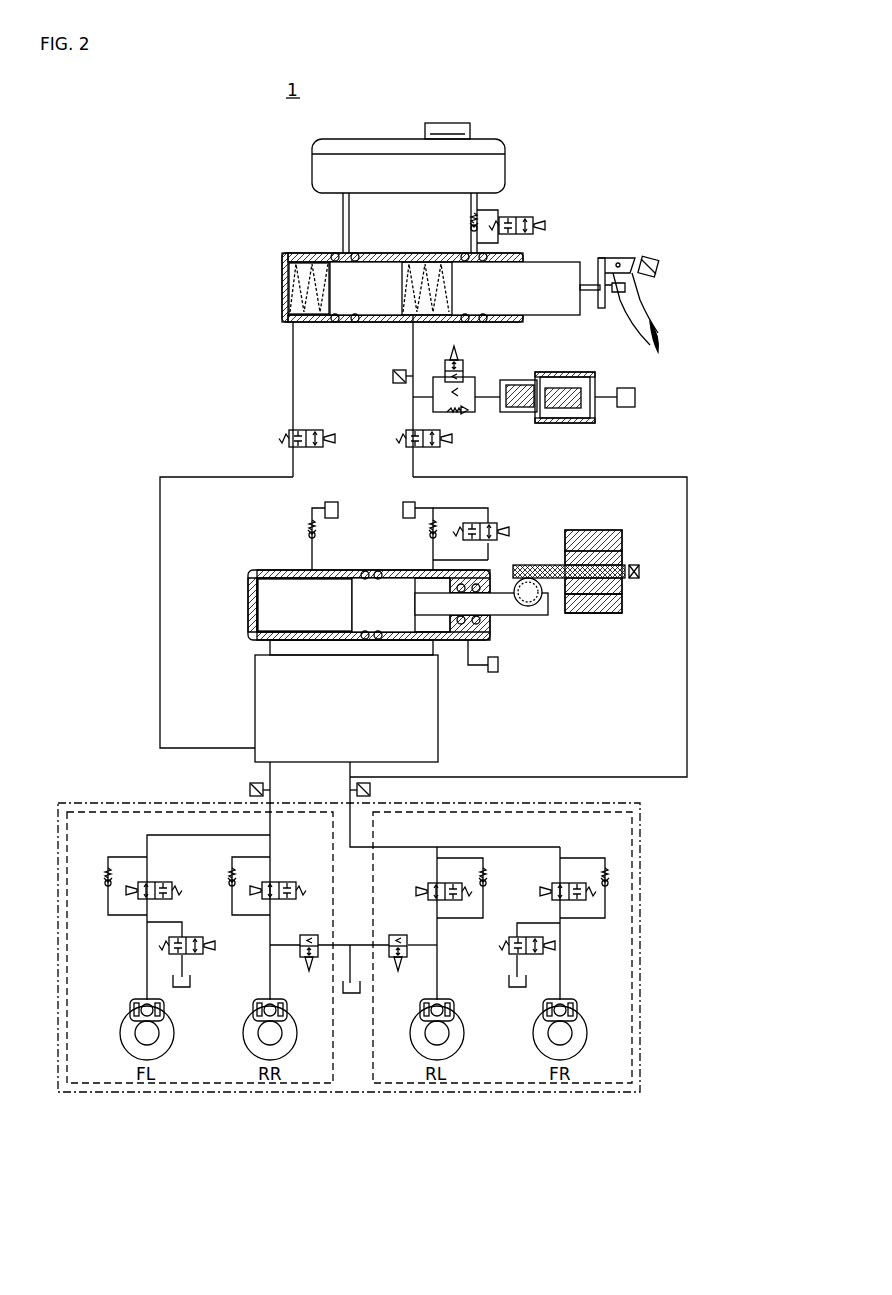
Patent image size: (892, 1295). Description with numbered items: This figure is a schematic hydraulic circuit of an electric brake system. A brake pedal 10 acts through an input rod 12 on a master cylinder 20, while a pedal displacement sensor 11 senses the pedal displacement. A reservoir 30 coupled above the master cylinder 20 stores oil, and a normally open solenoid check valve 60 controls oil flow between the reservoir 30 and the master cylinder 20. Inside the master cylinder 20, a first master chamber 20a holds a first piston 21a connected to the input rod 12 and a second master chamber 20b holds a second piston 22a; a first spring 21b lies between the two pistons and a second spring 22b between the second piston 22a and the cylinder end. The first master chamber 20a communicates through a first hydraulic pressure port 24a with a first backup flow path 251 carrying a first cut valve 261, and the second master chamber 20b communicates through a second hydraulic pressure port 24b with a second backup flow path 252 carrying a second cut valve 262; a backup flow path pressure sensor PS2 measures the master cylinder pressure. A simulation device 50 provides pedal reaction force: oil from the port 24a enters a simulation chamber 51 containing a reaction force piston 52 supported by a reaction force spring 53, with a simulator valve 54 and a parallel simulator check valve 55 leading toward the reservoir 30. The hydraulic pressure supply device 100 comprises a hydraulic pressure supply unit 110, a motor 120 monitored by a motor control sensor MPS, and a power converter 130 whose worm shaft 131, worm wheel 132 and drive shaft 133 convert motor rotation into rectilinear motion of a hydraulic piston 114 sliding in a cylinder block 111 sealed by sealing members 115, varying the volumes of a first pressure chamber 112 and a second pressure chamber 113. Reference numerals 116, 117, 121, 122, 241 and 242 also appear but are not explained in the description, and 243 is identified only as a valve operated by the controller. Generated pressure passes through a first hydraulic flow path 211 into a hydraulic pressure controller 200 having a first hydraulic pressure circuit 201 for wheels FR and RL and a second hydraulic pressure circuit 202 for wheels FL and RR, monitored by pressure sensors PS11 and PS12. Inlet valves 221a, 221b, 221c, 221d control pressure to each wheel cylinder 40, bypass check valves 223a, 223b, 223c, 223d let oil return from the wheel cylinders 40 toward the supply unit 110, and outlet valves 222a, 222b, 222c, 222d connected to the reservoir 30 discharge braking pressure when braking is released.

The brake pedal 10 is at (630, 293).
The pedal displacement sensor 11 is at (656, 262).
The input rod 12 is at (603, 272).
The master cylinder 20 is at (282, 270).
The first master chamber 20a is at (427, 262).
The second master chamber 20b is at (312, 262).
The first piston 21a is at (560, 262).
The first spring 21b is at (433, 315).
The second piston 22a is at (372, 262).
The second spring 22b is at (289, 290).
The first hydraulic pressure port 24a is at (410, 322).
The second hydraulic pressure port 24b is at (287, 320).
The reservoir 30 is at (340, 138).
The wheel cylinder 40 is at (165, 1012).
The simulation device 50 is at (595, 360).
The simulation chamber 51 is at (570, 372).
The reaction force piston 52 is at (525, 385).
The reaction force spring 53 is at (544, 388).
The simulator valve 54 is at (464, 362).
The simulator check valve 55 is at (470, 412).
The check valve 60 is at (532, 245).
The hydraulic pressure supply device 100 is at (242, 520).
The hydraulic pressure supply unit 110 is at (243, 562).
The cylinder block 111 is at (257, 600).
The first pressure chamber 112 is at (268, 610).
The second pressure chamber 113 is at (466, 645).
The hydraulic piston 114 is at (403, 585).
The sealing members 115 is at (367, 571).
The first communication hole 116 is at (312, 553).
The second communication hole 117 is at (438, 560).
The motor 120 is at (620, 524).
The stator 121 is at (622, 607).
The rotor 122 is at (622, 586).
The power converter 130 is at (553, 552).
The worm shaft 131 is at (533, 563).
The worm wheel 132 is at (544, 598).
The drive shaft 133 is at (538, 617).
The hydraulic pressure controller 200 is at (418, 1130).
The first hydraulic pressure circuit 201 is at (432, 1092).
The second hydraulic pressure circuit 202 is at (298, 1092).
The first hydraulic flow path 211 is at (262, 650).
The inlet valve 221a is at (571, 880).
The inlet valve 221b is at (447, 880).
The inlet valve 221c is at (285, 880).
The inlet valve 221d is at (163, 880).
The outlet valve 222a is at (505, 945).
The outlet valve 222b is at (398, 932).
The outlet valve 222c is at (310, 932).
The outlet valve 222d is at (208, 955).
The check valve 223a is at (614, 887).
The check valve 223b is at (487, 888).
The check valve 223c is at (232, 890).
The check valve 223d is at (107, 868).
The first dump valve 241 is at (309, 528).
The second dump valve 242 is at (437, 528).
The valve 243 is at (478, 521).
The first backup flow path 251 is at (413, 360).
The second backup flow path 252 is at (293, 360).
The first cut valve 261 is at (396, 437).
The second cut valve 262 is at (278, 441).
The backup flow path pressure sensor PS2 is at (393, 376).
The first hydraulic flow path pressure sensor PS11 is at (370, 790).
The second hydraulic flow path pressure sensor PS12 is at (250, 790).
The motor control sensor MPS is at (635, 565).